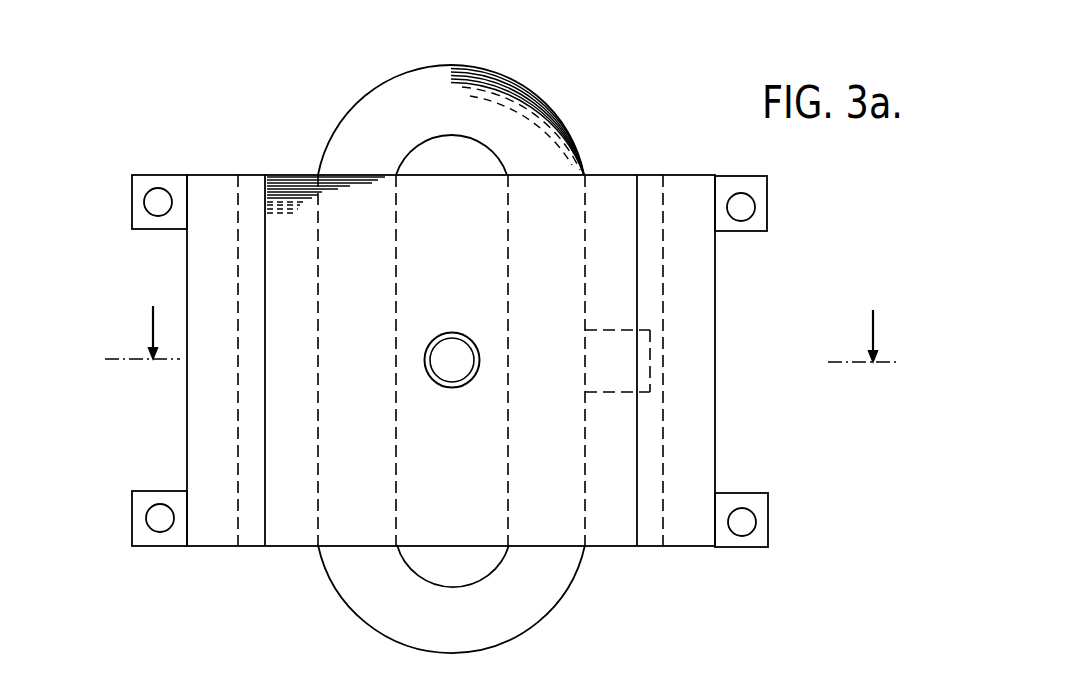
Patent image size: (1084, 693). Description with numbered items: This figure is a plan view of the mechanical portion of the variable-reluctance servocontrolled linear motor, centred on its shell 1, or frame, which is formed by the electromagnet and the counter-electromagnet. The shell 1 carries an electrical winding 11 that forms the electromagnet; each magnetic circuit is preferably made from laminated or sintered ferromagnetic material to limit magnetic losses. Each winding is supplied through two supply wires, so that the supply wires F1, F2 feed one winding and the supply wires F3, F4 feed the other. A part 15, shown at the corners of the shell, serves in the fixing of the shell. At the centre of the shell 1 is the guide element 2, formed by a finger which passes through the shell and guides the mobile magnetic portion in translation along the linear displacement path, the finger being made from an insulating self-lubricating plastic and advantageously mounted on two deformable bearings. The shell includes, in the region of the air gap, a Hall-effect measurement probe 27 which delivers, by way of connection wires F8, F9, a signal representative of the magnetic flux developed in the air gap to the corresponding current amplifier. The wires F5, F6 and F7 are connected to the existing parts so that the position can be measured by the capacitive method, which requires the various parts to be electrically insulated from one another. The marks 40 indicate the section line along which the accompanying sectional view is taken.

The shell 1 is at (289, 520).
The guide element 2 is at (452, 362).
The electrical winding 11 is at (372, 102).
The part 15 is at (147, 178).
The Hall-effect measurement probe 27 is at (613, 347).
The section line 40 is at (510, 334).
The supply wire F1 is at (584, 175).
The supply wire F2 is at (584, 175).
The supply wire F3 is at (584, 175).
The supply wire F4 is at (584, 175).
The wire F5 is at (715, 363).
The wire F6 is at (715, 363).
The wire F7 is at (715, 363).
The connection wire F8 is at (715, 363).
The connection wire F9 is at (715, 363).